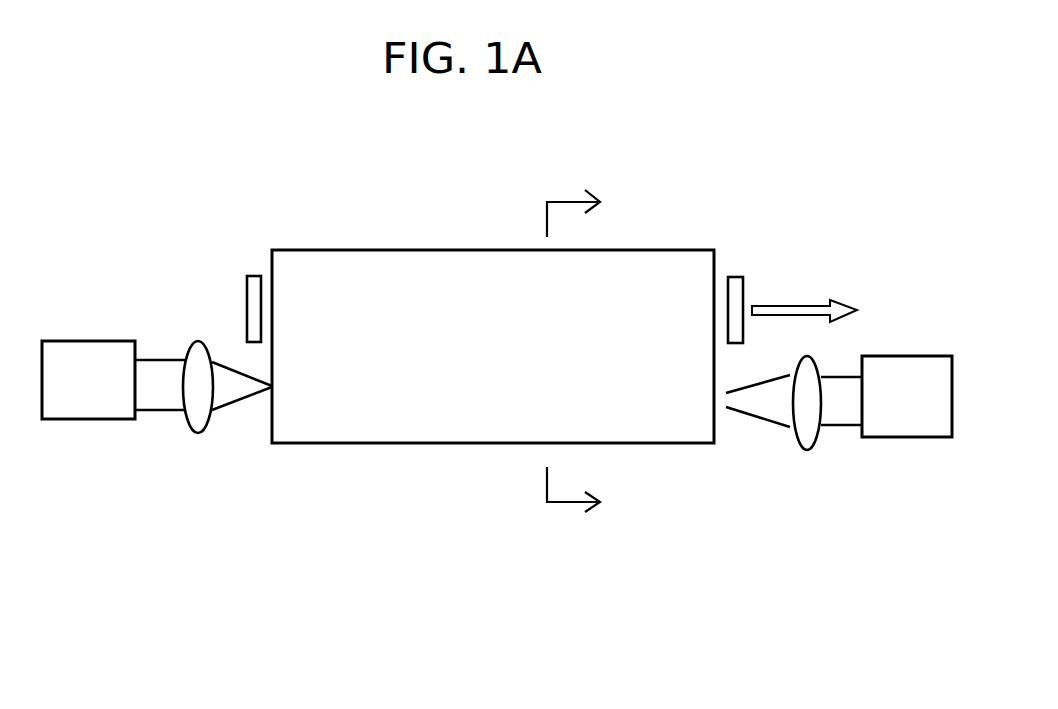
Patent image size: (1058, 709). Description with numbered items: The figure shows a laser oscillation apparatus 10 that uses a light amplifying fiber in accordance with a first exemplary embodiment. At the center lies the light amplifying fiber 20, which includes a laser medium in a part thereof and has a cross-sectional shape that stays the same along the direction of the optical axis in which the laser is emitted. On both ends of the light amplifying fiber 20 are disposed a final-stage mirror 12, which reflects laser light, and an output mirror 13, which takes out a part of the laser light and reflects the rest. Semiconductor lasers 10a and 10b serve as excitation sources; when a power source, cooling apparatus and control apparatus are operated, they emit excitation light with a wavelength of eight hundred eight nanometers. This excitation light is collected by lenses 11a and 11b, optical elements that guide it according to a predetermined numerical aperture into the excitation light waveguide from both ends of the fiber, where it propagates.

The laser oscillation apparatus 10 is at (471, 150).
The semiconductor laser 10a is at (92, 341).
The semiconductor laser 10b is at (930, 356).
The lens 11a is at (197, 433).
The lens 11b is at (807, 452).
The final-stage mirror 12 is at (252, 275).
The output mirror 13 is at (739, 276).
The light amplifying fiber 20 is at (407, 250).